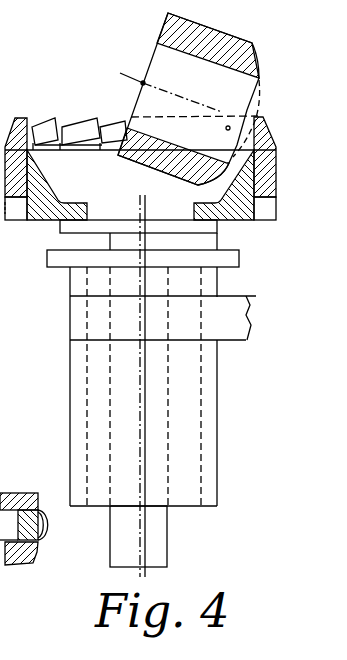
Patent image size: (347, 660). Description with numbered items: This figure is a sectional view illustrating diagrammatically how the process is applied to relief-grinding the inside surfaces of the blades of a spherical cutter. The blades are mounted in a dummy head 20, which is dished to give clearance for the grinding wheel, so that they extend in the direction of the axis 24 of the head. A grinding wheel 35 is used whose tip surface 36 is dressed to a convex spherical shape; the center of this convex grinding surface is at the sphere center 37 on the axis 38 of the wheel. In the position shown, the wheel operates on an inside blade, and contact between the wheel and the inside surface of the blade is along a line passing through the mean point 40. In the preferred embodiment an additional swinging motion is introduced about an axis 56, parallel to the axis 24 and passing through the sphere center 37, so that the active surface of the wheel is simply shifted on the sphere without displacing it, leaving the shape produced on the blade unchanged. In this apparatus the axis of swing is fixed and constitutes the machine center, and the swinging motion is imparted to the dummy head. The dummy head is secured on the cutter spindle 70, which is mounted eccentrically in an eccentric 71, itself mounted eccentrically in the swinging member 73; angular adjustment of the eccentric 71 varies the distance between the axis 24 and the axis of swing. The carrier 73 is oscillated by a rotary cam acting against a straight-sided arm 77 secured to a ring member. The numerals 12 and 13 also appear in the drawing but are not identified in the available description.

The seal 12 is at (38, 541).
The bearing housing 13 is at (0, 282).
The dummy head 20 is at (246, 215).
The axis of the head 24 is at (139, 423).
The grinding wheel 35 is at (225, 37).
The tip surface 36 is at (260, 55).
The sphere center 37 is at (141, 84).
The axis of the wheel 38 is at (180, 96).
The mean point 40 is at (226, 129).
The axis of swing 56 is at (146, 410).
The cutter spindle 70 is at (113, 532).
The eccentric 71 is at (202, 368).
The swinging member 73 is at (218, 448).
The arm 77 is at (248, 320).